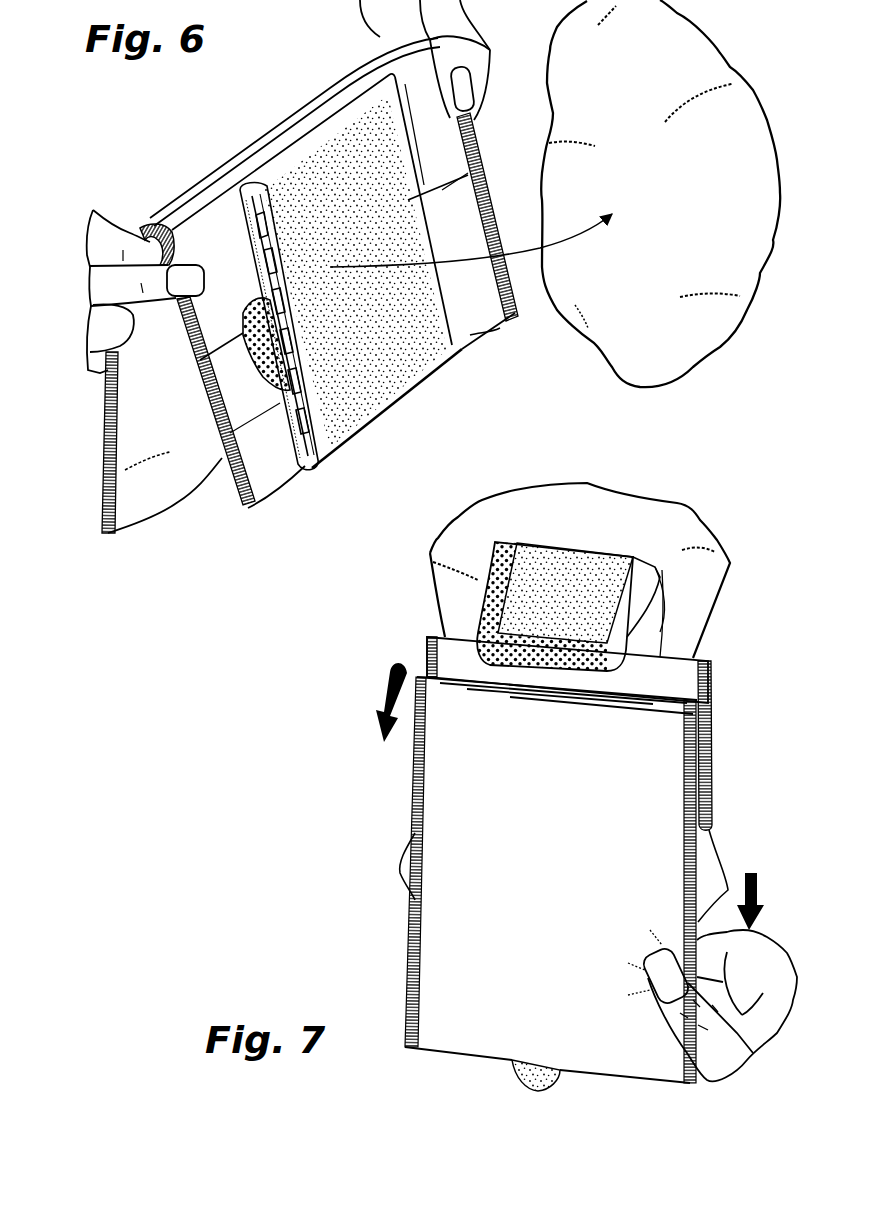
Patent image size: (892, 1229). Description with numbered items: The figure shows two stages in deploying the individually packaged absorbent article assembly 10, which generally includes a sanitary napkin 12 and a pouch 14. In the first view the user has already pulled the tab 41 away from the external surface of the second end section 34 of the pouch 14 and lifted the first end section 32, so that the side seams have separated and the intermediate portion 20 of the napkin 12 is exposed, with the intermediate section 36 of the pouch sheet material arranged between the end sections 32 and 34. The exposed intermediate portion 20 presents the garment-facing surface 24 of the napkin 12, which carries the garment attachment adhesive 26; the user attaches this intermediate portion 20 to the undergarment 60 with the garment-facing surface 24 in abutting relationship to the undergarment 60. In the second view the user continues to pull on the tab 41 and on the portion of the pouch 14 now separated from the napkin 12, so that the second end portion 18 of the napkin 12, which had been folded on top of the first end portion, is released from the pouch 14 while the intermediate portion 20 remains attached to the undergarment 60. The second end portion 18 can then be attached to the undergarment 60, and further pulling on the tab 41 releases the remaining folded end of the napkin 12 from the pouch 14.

In FIG. 6, the individually packaged absorbent article assembly 10 is at (205, 168).
In FIG. 6, the sanitary napkin 12 is at (346, 452).
In FIG. 7, the sanitary napkin 12 is at (510, 530).
In FIG. 6, the pouch 14 is at (203, 412).
In FIG. 7, the pouch 14 is at (563, 866).
In FIG. 7, the second end portion 18 is at (640, 588).
In FIG. 6, the intermediate portion 20 is at (398, 360).
In FIG. 6, the garment-facing surface 24 is at (290, 188).
In FIG. 6, the garment attachment adhesive 26 is at (346, 150).
In FIG. 6, the first end section 32 is at (160, 434).
In FIG. 7, the first end section 32 is at (552, 960).
In FIG. 6, the second end section 34 is at (256, 422).
In FIG. 7, the second end section 34 is at (672, 677).
In FIG. 6, the intermediate section 36 is at (236, 285).
In FIG. 7, the intermediate section 36 is at (561, 766).
In FIG. 7, the tab 41 is at (513, 1074).
In FIG. 6, the undergarment 60 is at (578, 307).
In FIG. 7, the undergarment 60 is at (667, 527).